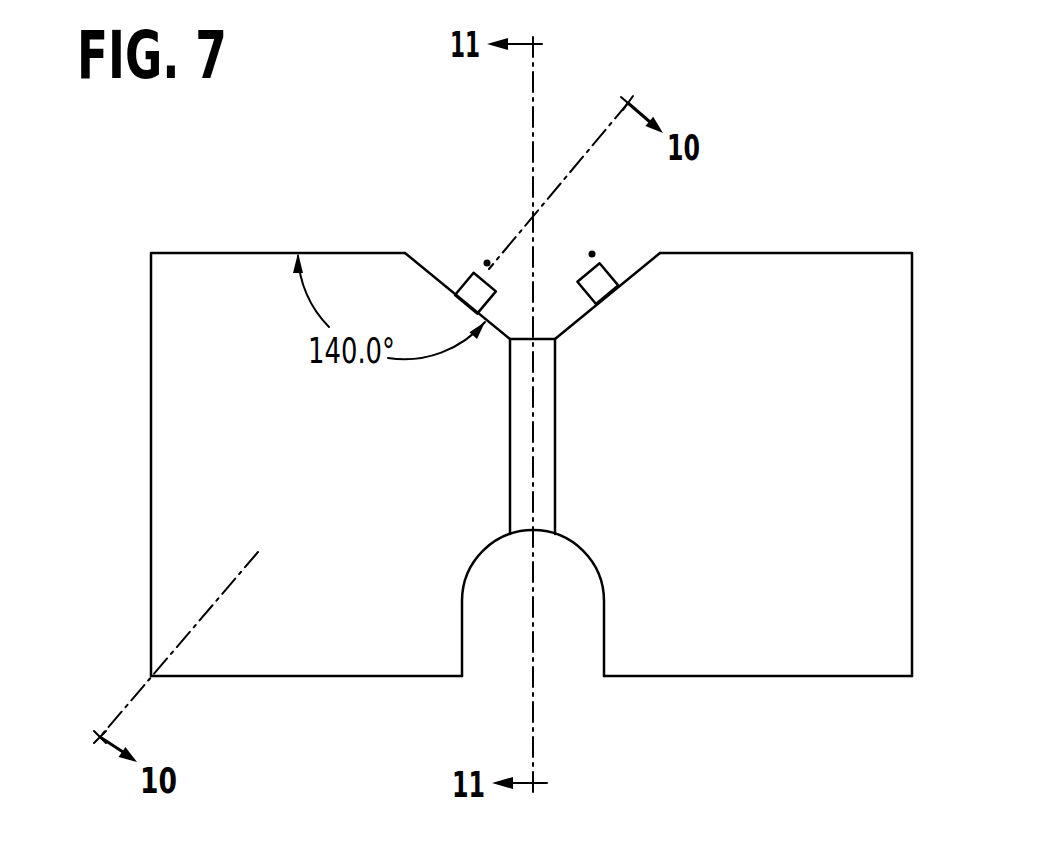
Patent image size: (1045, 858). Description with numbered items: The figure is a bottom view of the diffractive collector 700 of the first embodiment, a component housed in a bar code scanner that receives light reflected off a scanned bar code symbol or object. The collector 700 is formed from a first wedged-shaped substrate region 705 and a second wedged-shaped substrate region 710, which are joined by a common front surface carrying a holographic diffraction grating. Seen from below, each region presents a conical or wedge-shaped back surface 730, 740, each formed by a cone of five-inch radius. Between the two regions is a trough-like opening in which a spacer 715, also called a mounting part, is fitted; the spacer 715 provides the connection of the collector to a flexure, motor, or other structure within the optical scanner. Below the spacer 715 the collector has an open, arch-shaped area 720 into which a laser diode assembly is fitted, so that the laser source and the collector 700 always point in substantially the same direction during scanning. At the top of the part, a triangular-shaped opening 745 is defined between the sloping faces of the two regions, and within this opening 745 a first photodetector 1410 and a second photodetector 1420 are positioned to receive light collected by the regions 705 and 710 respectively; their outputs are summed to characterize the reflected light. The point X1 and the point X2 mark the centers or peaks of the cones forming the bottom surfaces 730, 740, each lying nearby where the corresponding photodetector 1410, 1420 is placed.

The diffractive collector 700 is at (531, 394).
The first wedged-shaped substrate region 705 is at (304, 660).
The second wedged-shaped substrate region 710 is at (785, 658).
The spacer 715 is at (538, 364).
The arch-shaped area 720 is at (507, 642).
The back surface 730 is at (257, 463).
The back surface 740 is at (788, 462).
The triangular-shaped opening 745 is at (550, 243).
The first photodetector 1410 is at (470, 273).
The second photodetector 1420 is at (611, 271).
The point x1 X1 is at (491, 240).
The point x2 X2 is at (590, 232).